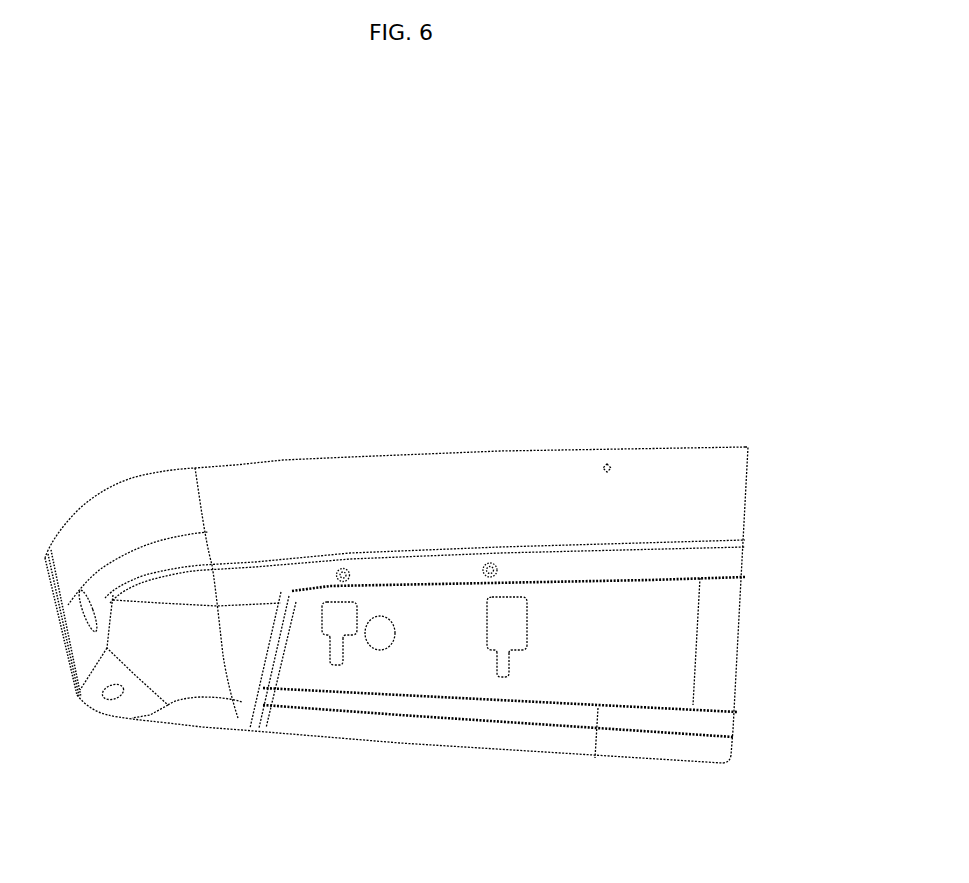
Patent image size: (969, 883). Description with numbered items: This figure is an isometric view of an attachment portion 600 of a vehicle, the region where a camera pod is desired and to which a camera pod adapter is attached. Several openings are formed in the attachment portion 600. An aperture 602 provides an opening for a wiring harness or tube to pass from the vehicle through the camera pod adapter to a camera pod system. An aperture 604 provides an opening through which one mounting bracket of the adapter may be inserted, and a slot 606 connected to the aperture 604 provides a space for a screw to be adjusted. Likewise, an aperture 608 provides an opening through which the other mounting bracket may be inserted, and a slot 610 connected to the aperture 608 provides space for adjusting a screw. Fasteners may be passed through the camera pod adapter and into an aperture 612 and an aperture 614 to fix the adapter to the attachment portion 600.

The attachment portion 600 is at (396, 498).
The aperture 602 is at (380, 636).
The aperture 604 is at (338, 616).
The slot 606 is at (336, 660).
The aperture 608 is at (505, 618).
The slot 610 is at (505, 663).
The aperture 612 is at (338, 573).
The aperture 614 is at (492, 568).